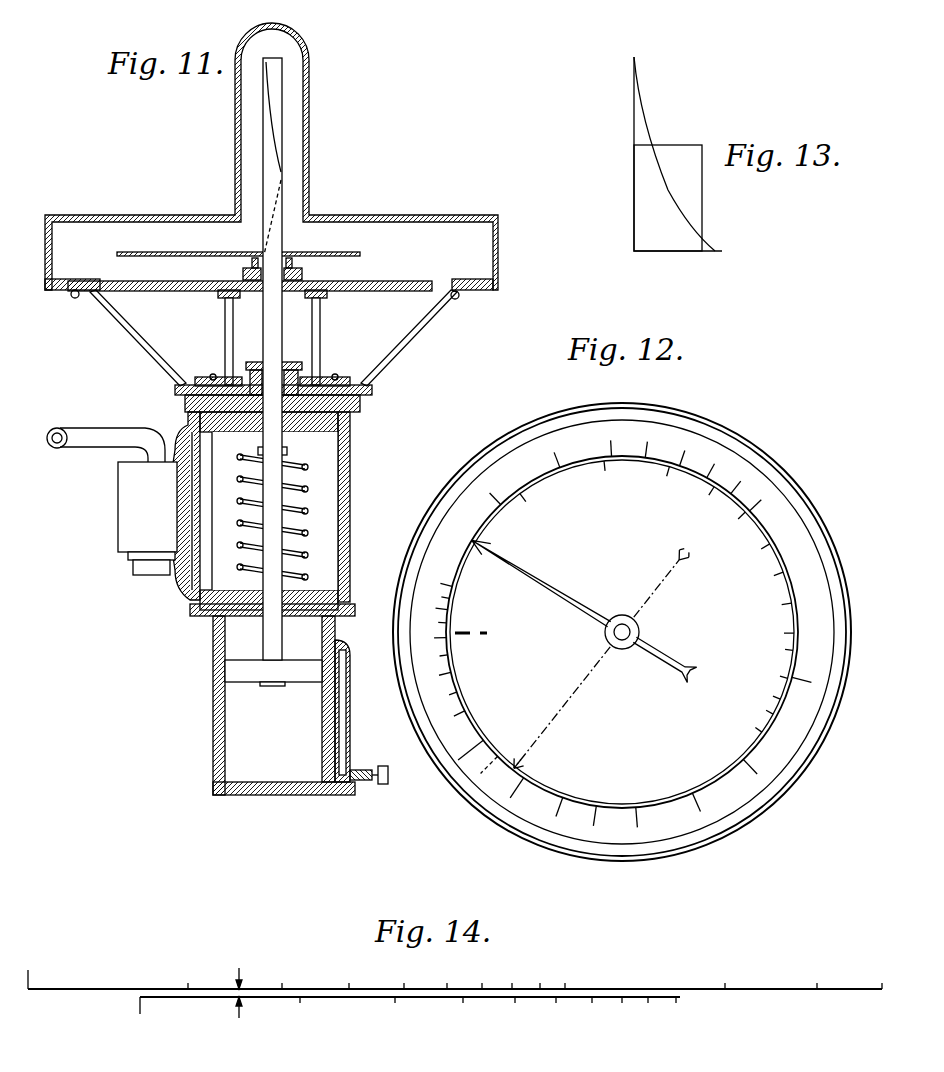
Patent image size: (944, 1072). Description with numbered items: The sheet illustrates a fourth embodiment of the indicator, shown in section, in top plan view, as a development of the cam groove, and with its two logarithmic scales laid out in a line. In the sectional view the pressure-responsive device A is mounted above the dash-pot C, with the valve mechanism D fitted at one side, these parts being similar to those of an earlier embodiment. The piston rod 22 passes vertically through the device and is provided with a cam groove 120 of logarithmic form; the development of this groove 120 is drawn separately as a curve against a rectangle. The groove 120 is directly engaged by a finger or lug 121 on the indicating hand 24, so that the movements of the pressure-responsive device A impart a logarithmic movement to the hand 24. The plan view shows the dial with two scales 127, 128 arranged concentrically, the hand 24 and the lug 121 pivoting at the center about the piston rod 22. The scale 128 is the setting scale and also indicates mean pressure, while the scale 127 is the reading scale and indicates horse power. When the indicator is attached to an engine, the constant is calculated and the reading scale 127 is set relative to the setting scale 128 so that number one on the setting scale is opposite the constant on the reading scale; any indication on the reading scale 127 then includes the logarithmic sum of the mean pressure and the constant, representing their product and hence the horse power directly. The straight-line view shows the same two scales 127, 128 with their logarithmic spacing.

In FIG. 11, the piston rod 22 is at (278, 72).
In FIG. 12, the piston rod 22 is at (646, 627).
In FIG. 11, the indicating hand 24 is at (170, 251).
In FIG. 12, the indicating hand 24 is at (582, 608).
In FIG. 11, the cam groove 120 is at (278, 122).
In FIG. 13, the cam groove 120 is at (646, 130).
In FIG. 11, the finger or lug 121 is at (270, 262).
In FIG. 12, the finger or lug 121 is at (600, 659).
In FIG. 11, the reading scale 127 is at (472, 288).
In FIG. 12, the reading scale 127 is at (622, 621).
In FIG. 14, the reading scale 127 is at (100, 966).
In FIG. 11, the setting scale 128 is at (400, 282).
In FIG. 12, the setting scale 128 is at (622, 594).
In FIG. 14, the setting scale 128 is at (166, 998).
In FIG. 11, the pressure-responsive device A is at (269, 514).
In FIG. 11, the dash-pot C is at (284, 705).
In FIG. 11, the valve mechanism D is at (112, 501).